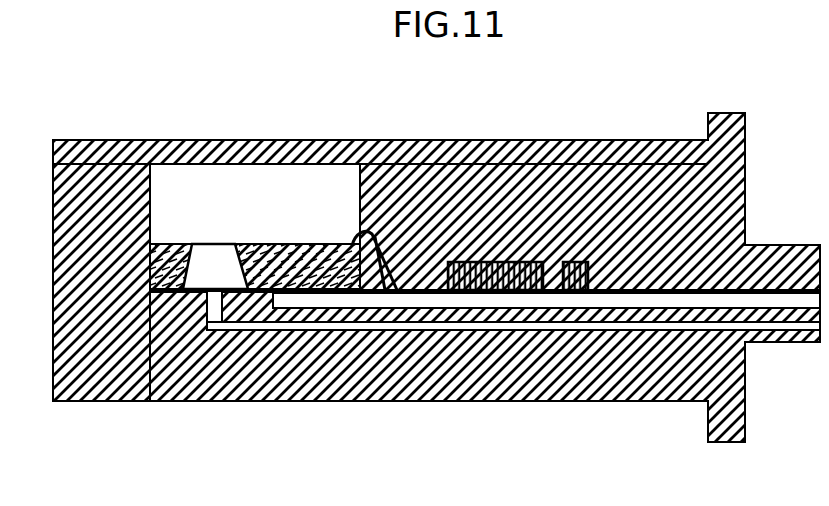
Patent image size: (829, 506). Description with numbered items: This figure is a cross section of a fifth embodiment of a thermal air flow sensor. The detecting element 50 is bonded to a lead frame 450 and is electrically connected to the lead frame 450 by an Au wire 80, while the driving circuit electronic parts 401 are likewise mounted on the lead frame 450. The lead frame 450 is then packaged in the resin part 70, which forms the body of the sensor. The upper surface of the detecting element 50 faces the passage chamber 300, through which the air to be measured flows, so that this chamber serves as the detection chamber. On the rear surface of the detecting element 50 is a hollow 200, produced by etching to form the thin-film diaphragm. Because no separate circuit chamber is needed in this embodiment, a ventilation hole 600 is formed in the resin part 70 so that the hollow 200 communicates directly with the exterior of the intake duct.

The resin part 70 is at (112, 208).
The passage chamber 300 is at (203, 208).
The detecting element 50 is at (293, 257).
The Au wire 80 is at (393, 237).
The driving circuit electronic parts 401 is at (505, 261).
The hollow 200 is at (197, 295).
The ventilation hole 600 is at (313, 326).
The lead frame 450 is at (637, 298).